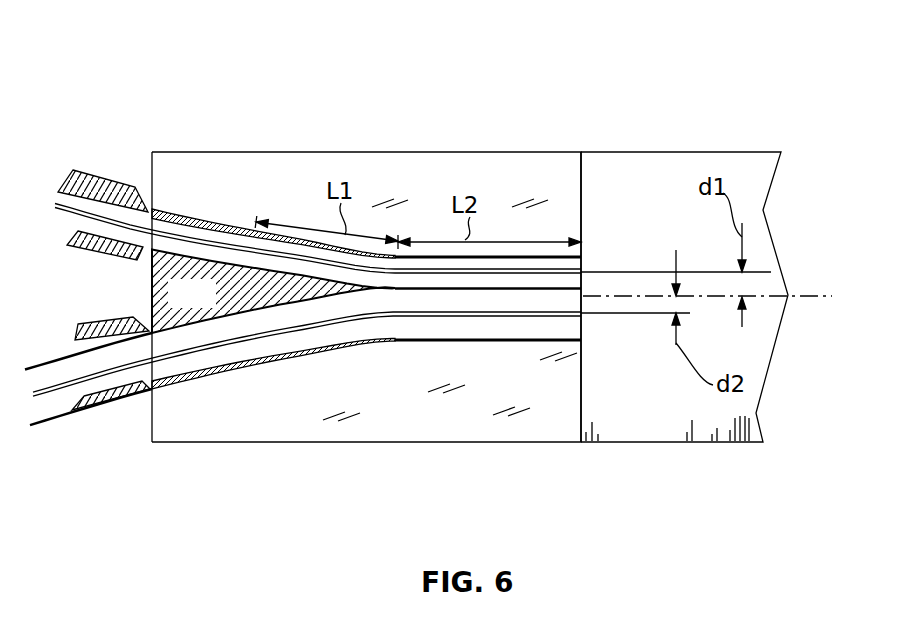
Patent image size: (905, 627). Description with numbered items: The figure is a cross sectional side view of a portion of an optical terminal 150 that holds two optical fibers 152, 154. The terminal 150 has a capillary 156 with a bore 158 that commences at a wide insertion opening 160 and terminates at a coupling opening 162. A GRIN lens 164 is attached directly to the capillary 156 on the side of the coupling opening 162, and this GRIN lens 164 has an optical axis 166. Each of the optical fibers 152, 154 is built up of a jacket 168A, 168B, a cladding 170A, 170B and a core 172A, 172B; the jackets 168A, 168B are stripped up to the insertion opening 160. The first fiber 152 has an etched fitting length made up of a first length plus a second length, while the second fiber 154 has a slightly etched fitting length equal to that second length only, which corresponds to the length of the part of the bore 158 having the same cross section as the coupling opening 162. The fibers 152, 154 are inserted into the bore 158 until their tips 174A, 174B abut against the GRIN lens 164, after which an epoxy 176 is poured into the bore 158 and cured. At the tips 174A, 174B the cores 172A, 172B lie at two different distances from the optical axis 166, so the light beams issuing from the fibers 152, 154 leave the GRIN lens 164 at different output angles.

The optical terminal 150 is at (299, 68).
The optical fiber 152 is at (101, 133).
The optical fiber 154 is at (95, 490).
The capillary 156 is at (366, 443).
The bore 158 is at (247, 368).
The insertion opening 160 is at (152, 283).
The coupling opening 162 is at (583, 255).
The GRIN lens 164 is at (646, 151).
The optical axis 166 is at (803, 297).
The jacket 168A is at (112, 172).
The jacket 168B is at (106, 410).
The cladding 170A is at (224, 230).
The cladding 170B is at (330, 335).
The core 172A is at (192, 233).
The core 172B is at (183, 372).
The tip 174A is at (583, 268).
The tip 174B is at (582, 327).
The epoxy 176 is at (366, 292).